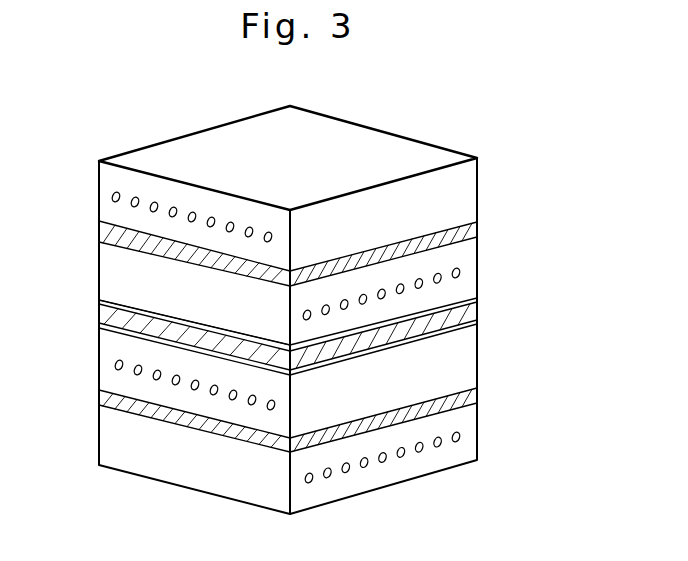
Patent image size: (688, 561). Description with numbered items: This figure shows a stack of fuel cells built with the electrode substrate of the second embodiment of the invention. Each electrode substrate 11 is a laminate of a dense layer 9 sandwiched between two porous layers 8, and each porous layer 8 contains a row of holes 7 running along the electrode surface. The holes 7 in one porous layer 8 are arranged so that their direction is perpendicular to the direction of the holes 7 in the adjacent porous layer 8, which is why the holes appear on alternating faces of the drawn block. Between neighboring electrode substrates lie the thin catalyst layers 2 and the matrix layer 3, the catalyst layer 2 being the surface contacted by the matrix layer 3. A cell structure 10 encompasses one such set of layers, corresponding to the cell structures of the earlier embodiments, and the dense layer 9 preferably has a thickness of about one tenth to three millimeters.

The catalyst layer 2 is at (465, 303).
The matrix layer 3 is at (465, 315).
The holes 7 is at (116, 192).
The porous layer 8 is at (463, 188).
The dense layer 9 is at (463, 230).
The cell structure 10 is at (548, 413).
The electrode substrate 11 is at (92, 293).